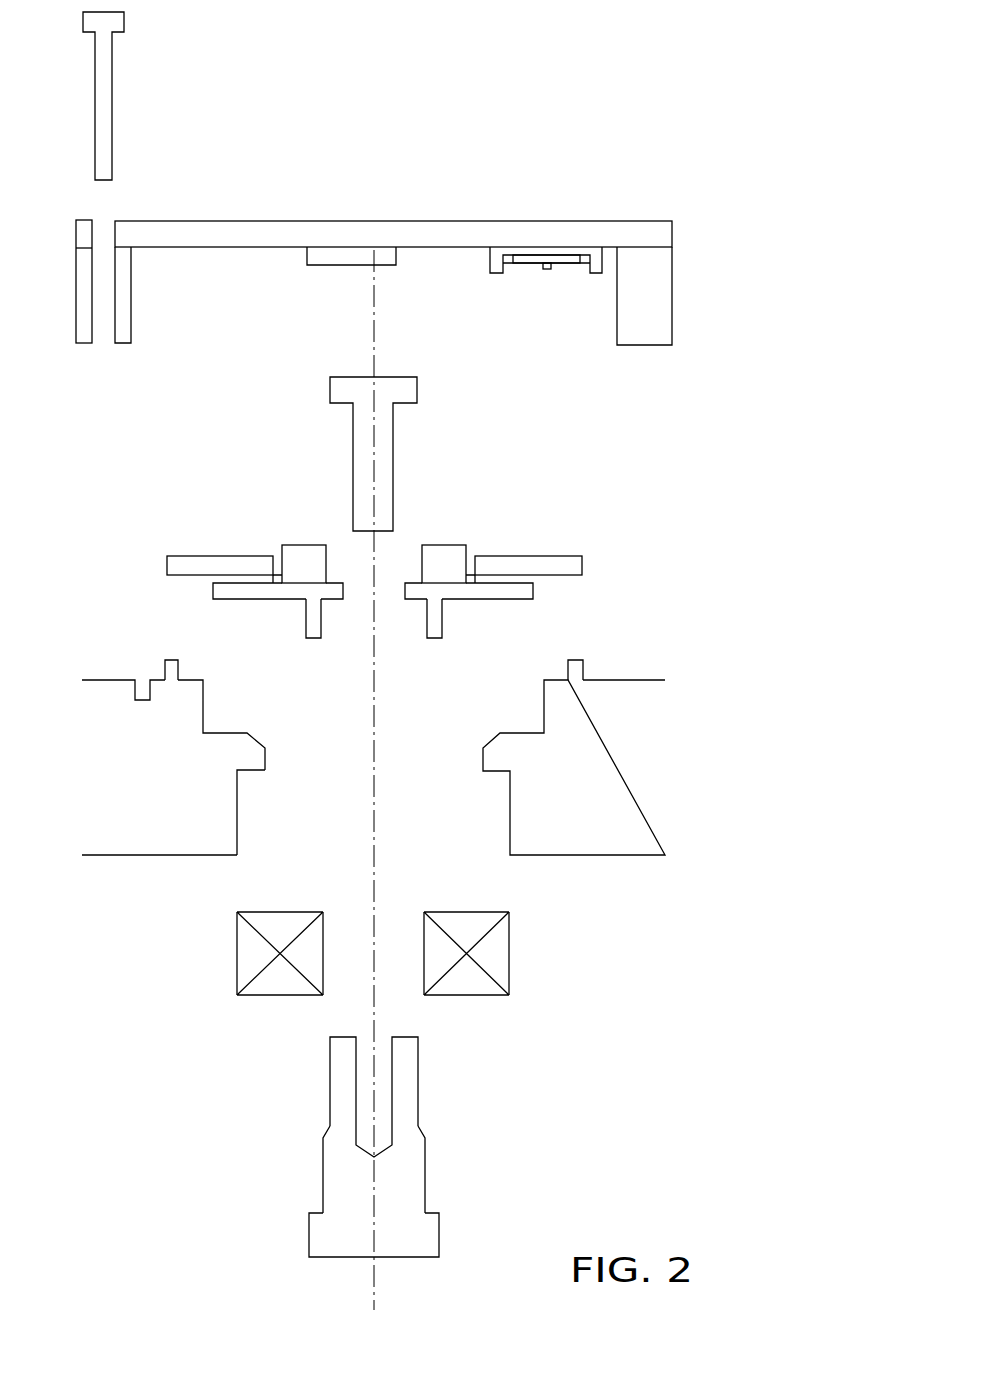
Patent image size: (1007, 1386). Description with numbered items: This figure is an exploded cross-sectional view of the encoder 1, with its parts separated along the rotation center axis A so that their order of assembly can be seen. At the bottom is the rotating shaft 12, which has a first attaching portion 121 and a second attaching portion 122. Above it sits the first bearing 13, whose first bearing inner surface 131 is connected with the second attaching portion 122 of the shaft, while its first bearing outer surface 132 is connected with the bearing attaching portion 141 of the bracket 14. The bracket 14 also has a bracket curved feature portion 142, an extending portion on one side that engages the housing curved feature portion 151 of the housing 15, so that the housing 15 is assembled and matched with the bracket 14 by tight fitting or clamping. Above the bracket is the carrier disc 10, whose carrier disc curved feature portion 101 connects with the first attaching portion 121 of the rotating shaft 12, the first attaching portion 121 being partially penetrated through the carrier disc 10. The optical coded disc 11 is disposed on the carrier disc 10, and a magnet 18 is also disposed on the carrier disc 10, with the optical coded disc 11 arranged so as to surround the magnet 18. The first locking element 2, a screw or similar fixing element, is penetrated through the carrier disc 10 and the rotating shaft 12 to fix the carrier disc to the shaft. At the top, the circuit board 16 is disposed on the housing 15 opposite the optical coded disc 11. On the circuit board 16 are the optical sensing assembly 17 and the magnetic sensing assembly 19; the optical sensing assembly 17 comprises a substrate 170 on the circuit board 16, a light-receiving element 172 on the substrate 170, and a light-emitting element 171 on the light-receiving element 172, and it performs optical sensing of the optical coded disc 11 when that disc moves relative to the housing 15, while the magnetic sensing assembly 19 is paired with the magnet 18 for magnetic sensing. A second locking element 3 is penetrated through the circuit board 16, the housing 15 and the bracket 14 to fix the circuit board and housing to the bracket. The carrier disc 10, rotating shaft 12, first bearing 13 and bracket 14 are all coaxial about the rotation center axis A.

The encoder 1 is at (754, 47).
The first locking element 2 is at (383, 465).
The second locking element 3 is at (102, 97).
The carrier disc 10 is at (419, 614).
The carrier disc curved feature portion 101 is at (313, 626).
The optical coded disc 11 is at (570, 565).
The rotating shaft 12 is at (368, 1147).
The first attaching portion 121 is at (330, 1082).
The second attaching portion 122 is at (322, 1175).
The first bearing 13 is at (368, 927).
The first bearing inner surface 131 is at (324, 953).
The first bearing outer surface 132 is at (237, 953).
The bracket 14 is at (417, 725).
The bearing attaching portion 141 is at (238, 812).
The bracket curved feature portion 142 is at (170, 670).
The housing 15 is at (645, 330).
The housing curved feature portion 151 is at (123, 336).
The circuit board 16 is at (482, 235).
The optical sensing assembly 17 is at (645, 238).
The substrate 170 is at (547, 253).
The light-emitting element 171 is at (548, 268).
The light-receiving element 172 is at (567, 259).
The magnet 18 is at (303, 565).
The magnetic sensing assembly 19 is at (343, 257).
The rotation center axis A is at (353, 1288).